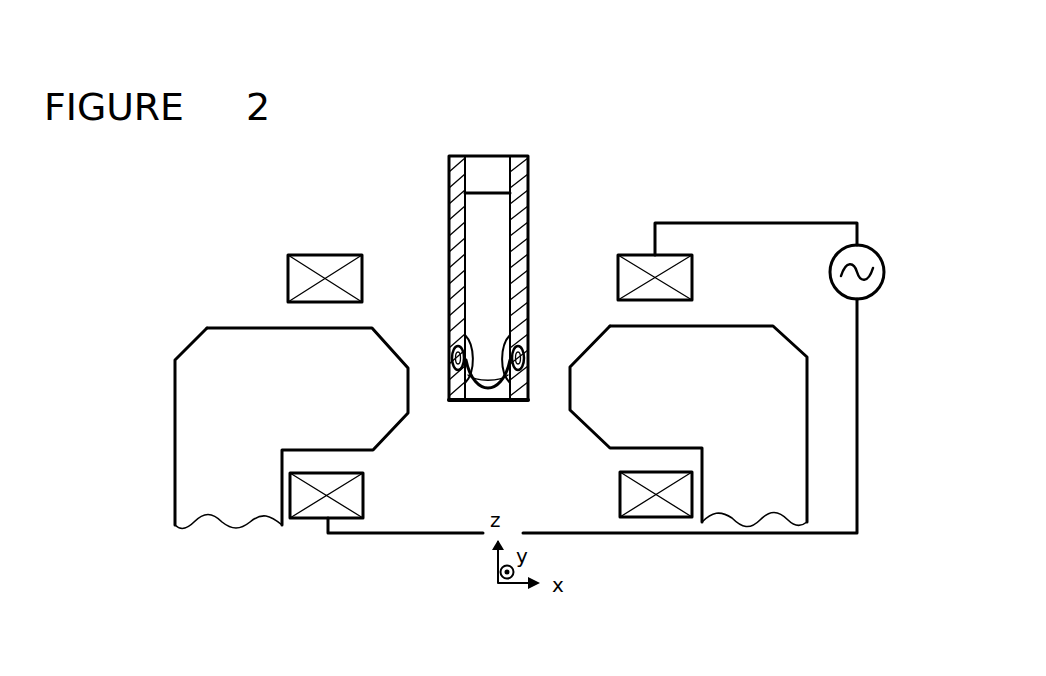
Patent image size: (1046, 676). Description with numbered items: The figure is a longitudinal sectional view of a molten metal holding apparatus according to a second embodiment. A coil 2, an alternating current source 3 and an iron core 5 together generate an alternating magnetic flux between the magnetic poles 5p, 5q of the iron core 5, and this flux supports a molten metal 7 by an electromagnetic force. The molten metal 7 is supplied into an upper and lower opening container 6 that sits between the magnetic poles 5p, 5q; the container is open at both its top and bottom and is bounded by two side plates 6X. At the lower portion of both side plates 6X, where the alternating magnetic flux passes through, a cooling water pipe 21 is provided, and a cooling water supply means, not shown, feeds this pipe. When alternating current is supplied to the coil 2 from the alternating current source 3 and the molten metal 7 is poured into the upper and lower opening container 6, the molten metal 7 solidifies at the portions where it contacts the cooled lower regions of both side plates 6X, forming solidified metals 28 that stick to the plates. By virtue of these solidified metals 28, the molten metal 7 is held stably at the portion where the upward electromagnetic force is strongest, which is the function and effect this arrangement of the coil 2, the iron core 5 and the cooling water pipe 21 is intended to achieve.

The coil 2 is at (326, 262).
The alternating current source 3 is at (865, 255).
The iron core 5 is at (499, 400).
The magnetic pole 5p is at (291, 428).
The magnetic pole 5q is at (688, 426).
The upper and lower opening container 6 is at (506, 294).
The side plate 6X is at (530, 237).
The molten metal 7 is at (492, 208).
The cooling water pipe 21 is at (452, 340).
The solidified metal 28 is at (503, 345).